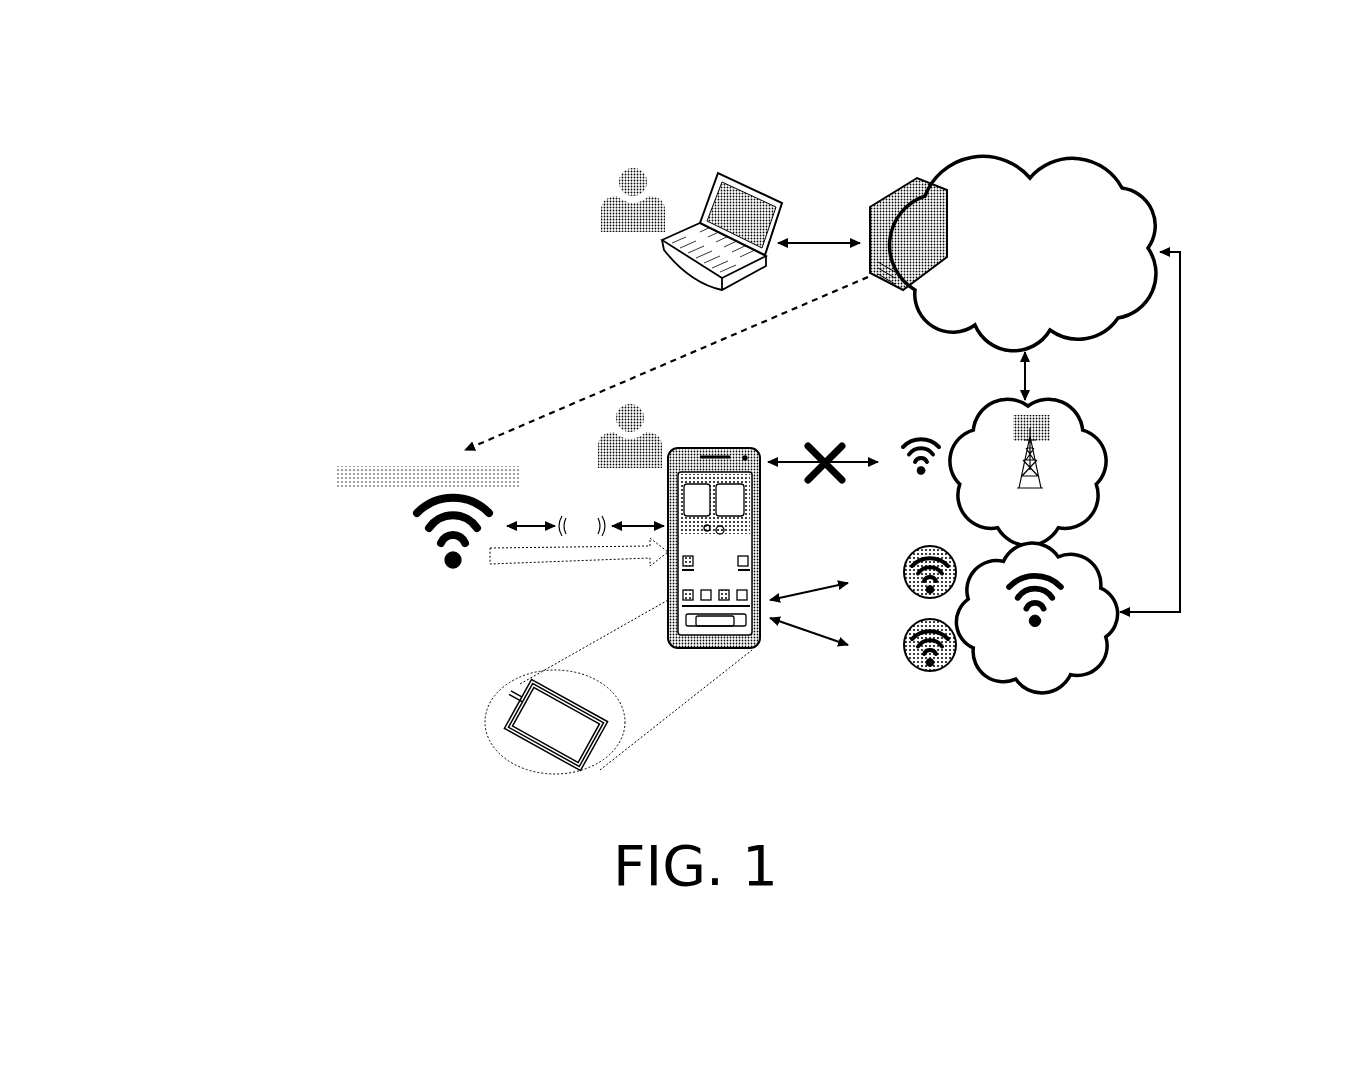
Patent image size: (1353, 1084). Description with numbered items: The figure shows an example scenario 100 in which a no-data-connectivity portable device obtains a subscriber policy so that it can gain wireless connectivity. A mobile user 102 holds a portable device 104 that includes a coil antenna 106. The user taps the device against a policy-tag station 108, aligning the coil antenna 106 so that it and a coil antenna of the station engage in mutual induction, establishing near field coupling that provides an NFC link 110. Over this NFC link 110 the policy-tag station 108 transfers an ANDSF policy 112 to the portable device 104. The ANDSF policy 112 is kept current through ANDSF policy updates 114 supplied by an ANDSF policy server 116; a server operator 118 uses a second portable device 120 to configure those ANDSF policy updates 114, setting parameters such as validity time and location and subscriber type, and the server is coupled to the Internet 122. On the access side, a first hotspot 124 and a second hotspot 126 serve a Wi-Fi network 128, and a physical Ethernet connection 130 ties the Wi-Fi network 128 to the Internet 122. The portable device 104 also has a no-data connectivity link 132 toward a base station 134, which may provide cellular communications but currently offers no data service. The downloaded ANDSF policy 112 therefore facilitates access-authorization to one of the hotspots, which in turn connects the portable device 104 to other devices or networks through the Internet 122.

The example scenario 100 is at (258, 113).
The mobile user 102 is at (662, 408).
The portable device 104 is at (710, 440).
The coil antenna 106 is at (515, 680).
The policy-tag station 108 is at (390, 520).
The NFC link 110 is at (580, 498).
The ANDSF policy 112 is at (579, 552).
The ANDSF policy updates 114 is at (590, 385).
The ANDSF policy server 116 is at (922, 175).
The server operator 118 is at (590, 221).
The second portable device 120 is at (737, 163).
The Internet 122 is at (1023, 253).
The first hotspot 124 is at (863, 579).
The second hotspot 126 is at (863, 652).
The Wi-Fi network 128 is at (1090, 548).
The physical Ethernet connection 130 is at (1190, 482).
The no-data connectivity link 132 is at (860, 445).
The base station 134 is at (1095, 410).